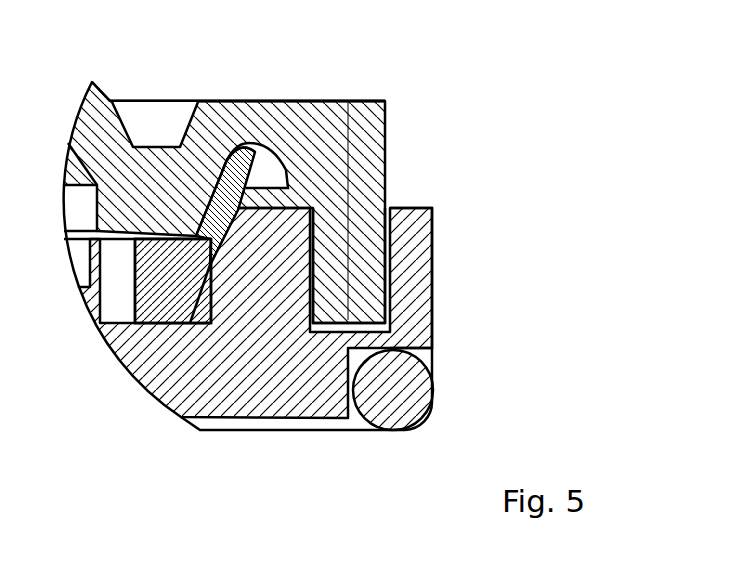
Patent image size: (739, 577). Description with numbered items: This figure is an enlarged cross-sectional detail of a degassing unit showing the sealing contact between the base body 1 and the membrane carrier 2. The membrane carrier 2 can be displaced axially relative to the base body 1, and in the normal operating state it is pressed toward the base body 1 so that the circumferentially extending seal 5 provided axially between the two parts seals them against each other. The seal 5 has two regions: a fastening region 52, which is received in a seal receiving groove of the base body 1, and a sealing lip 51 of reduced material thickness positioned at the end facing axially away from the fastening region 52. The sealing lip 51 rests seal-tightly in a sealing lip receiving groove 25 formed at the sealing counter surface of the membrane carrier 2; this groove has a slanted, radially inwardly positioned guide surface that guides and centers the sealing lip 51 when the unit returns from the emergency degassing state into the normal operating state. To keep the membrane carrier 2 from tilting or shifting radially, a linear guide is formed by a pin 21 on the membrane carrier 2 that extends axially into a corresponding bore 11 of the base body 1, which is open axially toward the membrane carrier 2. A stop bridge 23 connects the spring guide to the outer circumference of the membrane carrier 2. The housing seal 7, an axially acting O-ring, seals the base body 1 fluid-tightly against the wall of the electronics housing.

The base body 1 is at (259, 418).
The membrane carrier 2 is at (290, 101).
The seal 5 is at (166, 320).
The housing seal 7 is at (402, 394).
The bore 11 is at (393, 270).
The pin 21 is at (362, 222).
The stop bridge 23 is at (100, 97).
The sealing lip receiving groove 25 is at (278, 157).
The sealing lip 51 is at (249, 152).
The fastening region 52 is at (163, 297).